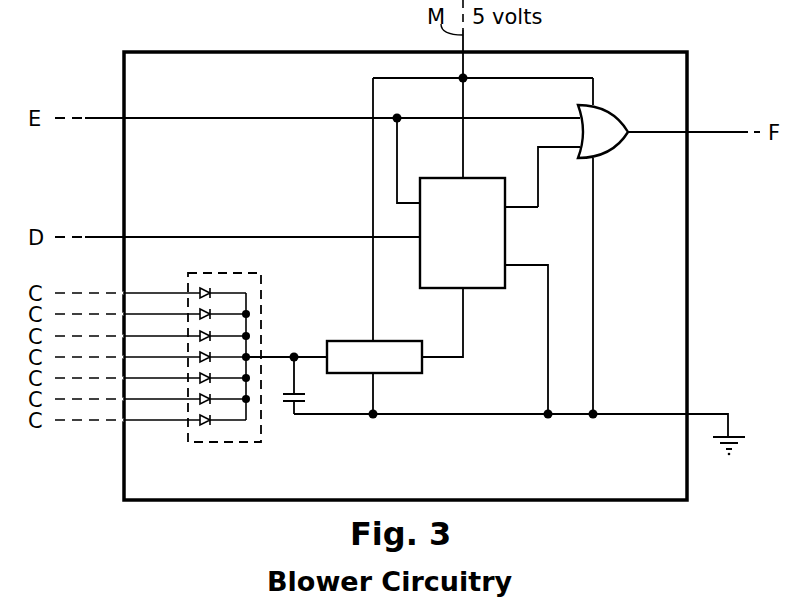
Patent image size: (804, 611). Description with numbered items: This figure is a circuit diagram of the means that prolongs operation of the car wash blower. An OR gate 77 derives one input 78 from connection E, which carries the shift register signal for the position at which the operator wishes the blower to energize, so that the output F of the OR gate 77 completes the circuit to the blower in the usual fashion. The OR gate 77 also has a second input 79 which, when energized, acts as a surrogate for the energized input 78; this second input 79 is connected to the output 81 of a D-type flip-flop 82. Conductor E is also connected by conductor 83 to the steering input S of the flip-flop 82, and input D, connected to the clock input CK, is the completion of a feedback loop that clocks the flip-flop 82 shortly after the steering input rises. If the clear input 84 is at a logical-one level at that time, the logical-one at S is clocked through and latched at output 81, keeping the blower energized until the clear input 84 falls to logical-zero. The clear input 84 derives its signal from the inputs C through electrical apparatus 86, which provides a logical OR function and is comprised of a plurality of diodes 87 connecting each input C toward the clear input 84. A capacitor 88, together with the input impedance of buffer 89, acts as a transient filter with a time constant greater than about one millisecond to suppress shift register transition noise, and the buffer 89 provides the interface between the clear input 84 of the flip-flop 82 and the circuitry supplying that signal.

The OR gate 77 is at (612, 110).
The input 78 is at (576, 114).
The second input 79 is at (568, 150).
The output 81 is at (508, 208).
The D-type flip-flop 82 is at (476, 180).
The conductor 83 is at (415, 152).
The clear input 84 is at (463, 292).
The electrical apparatus 86 is at (261, 305).
The diodes 87 is at (200, 335).
The capacitor 88 is at (300, 393).
The buffer 89 is at (416, 341).